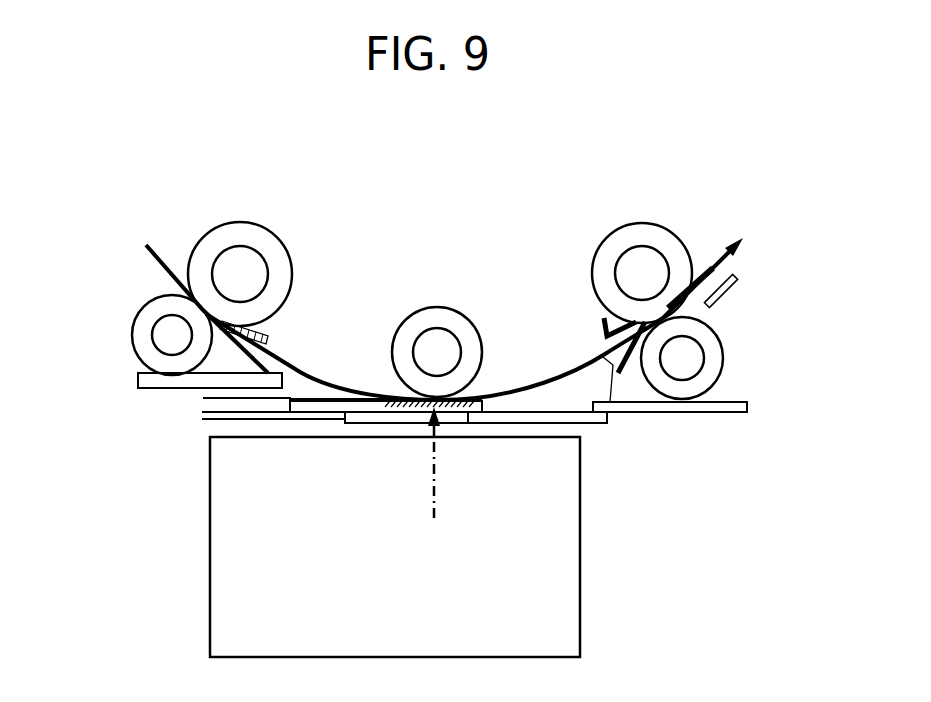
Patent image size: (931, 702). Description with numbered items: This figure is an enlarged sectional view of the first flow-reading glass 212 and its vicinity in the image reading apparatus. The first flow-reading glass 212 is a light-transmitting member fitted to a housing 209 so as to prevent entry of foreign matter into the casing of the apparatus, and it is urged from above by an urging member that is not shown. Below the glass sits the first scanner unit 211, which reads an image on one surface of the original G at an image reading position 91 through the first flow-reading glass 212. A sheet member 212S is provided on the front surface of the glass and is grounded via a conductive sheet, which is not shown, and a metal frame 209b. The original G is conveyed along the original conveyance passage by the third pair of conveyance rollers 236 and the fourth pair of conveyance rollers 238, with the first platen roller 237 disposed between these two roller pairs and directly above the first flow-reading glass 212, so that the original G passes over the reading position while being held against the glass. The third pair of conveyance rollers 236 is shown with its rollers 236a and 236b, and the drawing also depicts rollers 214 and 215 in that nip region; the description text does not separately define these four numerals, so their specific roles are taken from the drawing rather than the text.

The third pair of conveyance rollers 236 is at (225, 257).
The feed roller 214 is at (278, 237).
The feed roller of feeding unit 236a is at (291, 257).
The separation roller of feeding unit 236b is at (168, 322).
The separation roller 215 is at (160, 340).
The first platen roller 237 is at (472, 325).
The fourth pair of conveyance rollers 238 is at (725, 355).
The housing 209 is at (357, 437).
The metal frame 209b is at (205, 421).
The first flow-reading glass 212 is at (386, 407).
The sheet member 212S is at (315, 398).
The first scanner unit 211 is at (208, 540).
The image reading position 91 is at (433, 481).
The original G is at (751, 236).